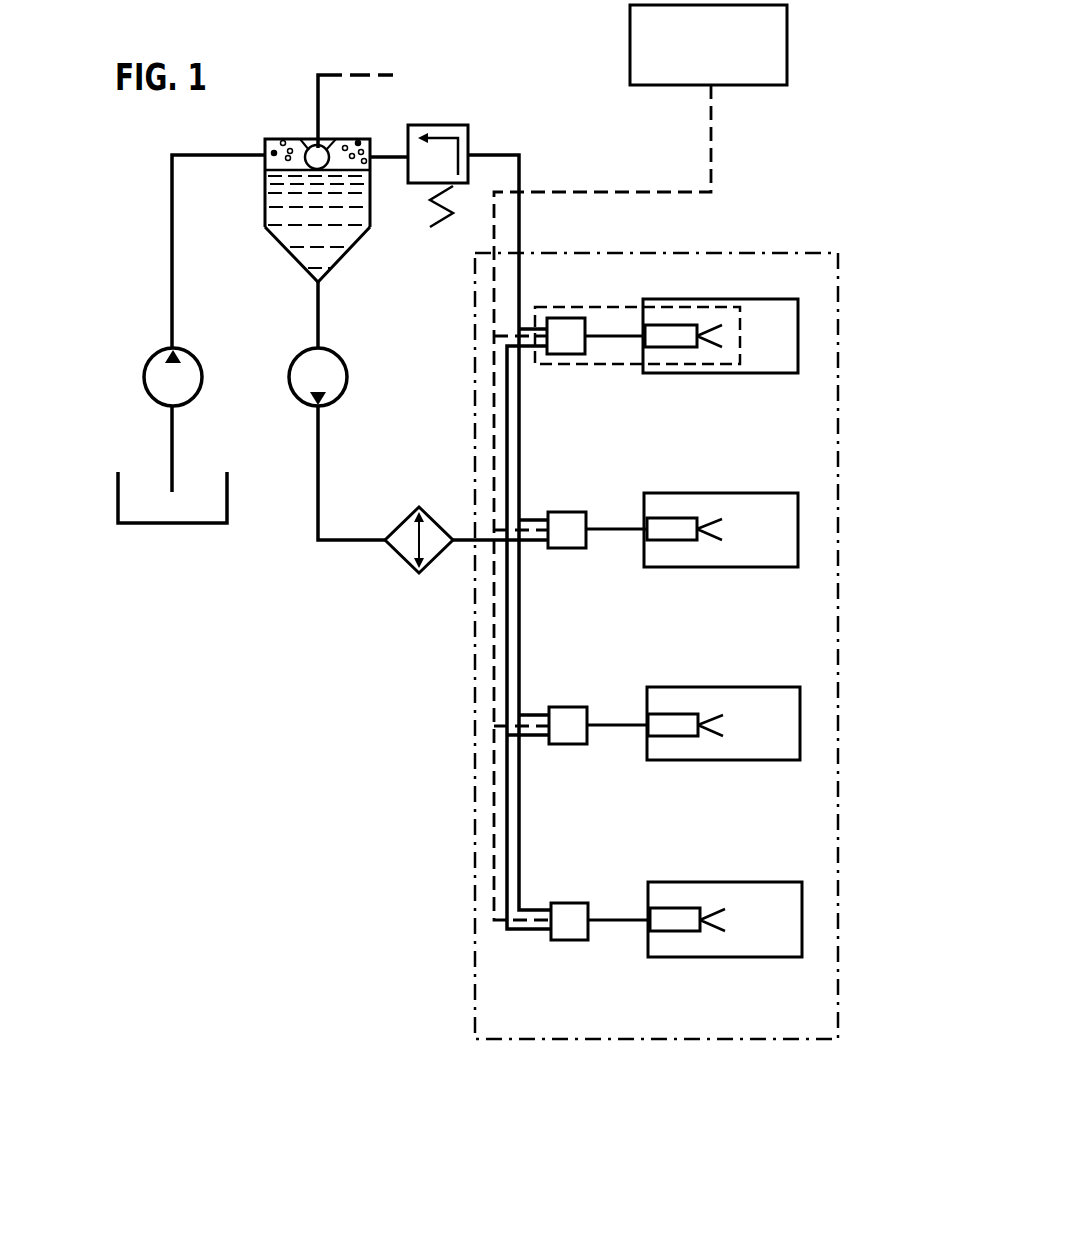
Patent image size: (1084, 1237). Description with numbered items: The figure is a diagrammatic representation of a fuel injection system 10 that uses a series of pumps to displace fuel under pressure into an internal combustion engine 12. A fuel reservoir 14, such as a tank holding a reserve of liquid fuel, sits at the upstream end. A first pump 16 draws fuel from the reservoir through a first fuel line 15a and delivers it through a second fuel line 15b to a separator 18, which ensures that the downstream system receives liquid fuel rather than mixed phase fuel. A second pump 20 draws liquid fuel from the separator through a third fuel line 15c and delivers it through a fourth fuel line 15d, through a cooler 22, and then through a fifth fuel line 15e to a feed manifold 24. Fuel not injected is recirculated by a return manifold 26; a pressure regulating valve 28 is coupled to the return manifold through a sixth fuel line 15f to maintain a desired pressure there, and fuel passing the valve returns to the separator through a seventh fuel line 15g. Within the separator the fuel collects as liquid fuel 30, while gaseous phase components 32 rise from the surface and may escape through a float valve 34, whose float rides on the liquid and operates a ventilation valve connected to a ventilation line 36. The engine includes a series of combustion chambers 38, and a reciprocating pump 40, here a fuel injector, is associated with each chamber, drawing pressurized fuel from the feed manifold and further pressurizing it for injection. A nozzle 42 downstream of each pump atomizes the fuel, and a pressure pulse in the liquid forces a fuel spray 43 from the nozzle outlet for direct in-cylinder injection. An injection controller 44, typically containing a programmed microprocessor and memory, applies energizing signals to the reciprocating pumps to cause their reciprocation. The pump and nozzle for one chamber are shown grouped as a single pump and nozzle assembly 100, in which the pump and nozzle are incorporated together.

The fuel injection system 10 is at (440, 712).
The internal combustion engine 12 is at (735, 1040).
The fuel reservoir 14 is at (130, 524).
The first fuel line 15a is at (172, 438).
The second fuel line 15b is at (172, 224).
The third fuel line 15c is at (320, 311).
The fourth fuel line 15d is at (320, 450).
The fifth fuel line 15e is at (466, 533).
The sixth fuel line 15f is at (494, 154).
The seventh fuel line 15g is at (388, 153).
The first pump 16 is at (146, 366).
The separator 18 is at (280, 240).
The second pump 20 is at (290, 364).
The cooler 22 is at (405, 560).
The feed manifold 24 is at (485, 548).
The return manifold 26 is at (520, 282).
The pressure regulating valve 28 is at (436, 125).
The liquid fuel 30 is at (326, 217).
The gaseous phase components 32 is at (340, 142).
The float valve 34 is at (305, 146).
The ventilation line 36 is at (333, 73).
The combustion chamber 38 is at (798, 338).
The reciprocating pump 40 is at (567, 355).
The nozzle 42 is at (670, 348).
The fuel spray 43 is at (712, 348).
The injection controller 44 is at (630, 43).
The pump and nozzle assembly 100 is at (605, 307).